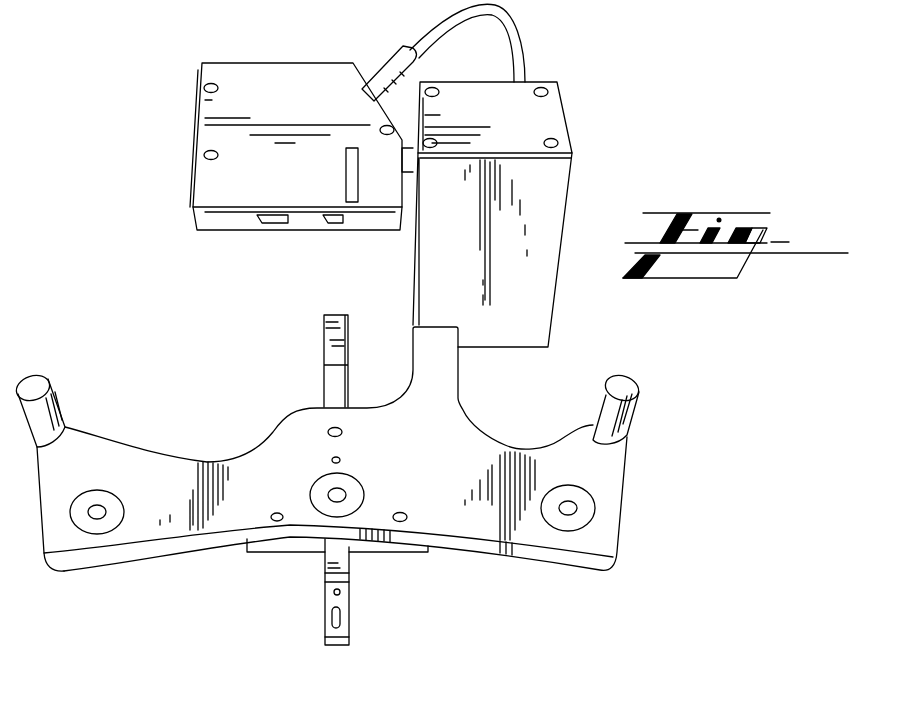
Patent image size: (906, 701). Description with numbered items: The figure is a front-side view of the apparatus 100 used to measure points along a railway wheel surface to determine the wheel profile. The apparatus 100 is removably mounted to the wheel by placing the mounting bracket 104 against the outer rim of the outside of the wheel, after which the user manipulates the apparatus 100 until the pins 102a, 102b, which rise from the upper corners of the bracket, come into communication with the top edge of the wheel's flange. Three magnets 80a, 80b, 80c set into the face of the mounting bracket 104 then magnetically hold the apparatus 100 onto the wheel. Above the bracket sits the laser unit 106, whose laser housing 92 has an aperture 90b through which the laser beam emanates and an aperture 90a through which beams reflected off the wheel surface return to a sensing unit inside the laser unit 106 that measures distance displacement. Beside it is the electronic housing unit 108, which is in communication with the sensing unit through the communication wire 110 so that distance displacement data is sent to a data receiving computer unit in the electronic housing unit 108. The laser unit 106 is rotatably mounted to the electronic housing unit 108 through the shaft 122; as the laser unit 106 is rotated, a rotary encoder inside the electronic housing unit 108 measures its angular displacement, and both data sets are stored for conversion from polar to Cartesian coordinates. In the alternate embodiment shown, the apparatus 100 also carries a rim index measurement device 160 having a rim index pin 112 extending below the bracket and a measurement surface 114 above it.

The apparatus 100 is at (665, 75).
The mounting bracket 104 is at (495, 513).
The laser unit 106 is at (223, 53).
The electronic housing unit 108 is at (565, 109).
The communication wire 110 is at (523, 44).
The rim index pin 112 is at (330, 618).
The measurement surface 114 is at (322, 340).
The shaft 122 is at (405, 161).
The laser housing 92 is at (222, 138).
The aperture 90a is at (262, 224).
The aperture 90b is at (335, 226).
The pin 102a is at (632, 398).
The pin 102b is at (57, 400).
The magnet 80a is at (100, 533).
The magnet 80b is at (312, 506).
The magnet 80c is at (595, 500).
The rim index measurement device 160 is at (353, 578).